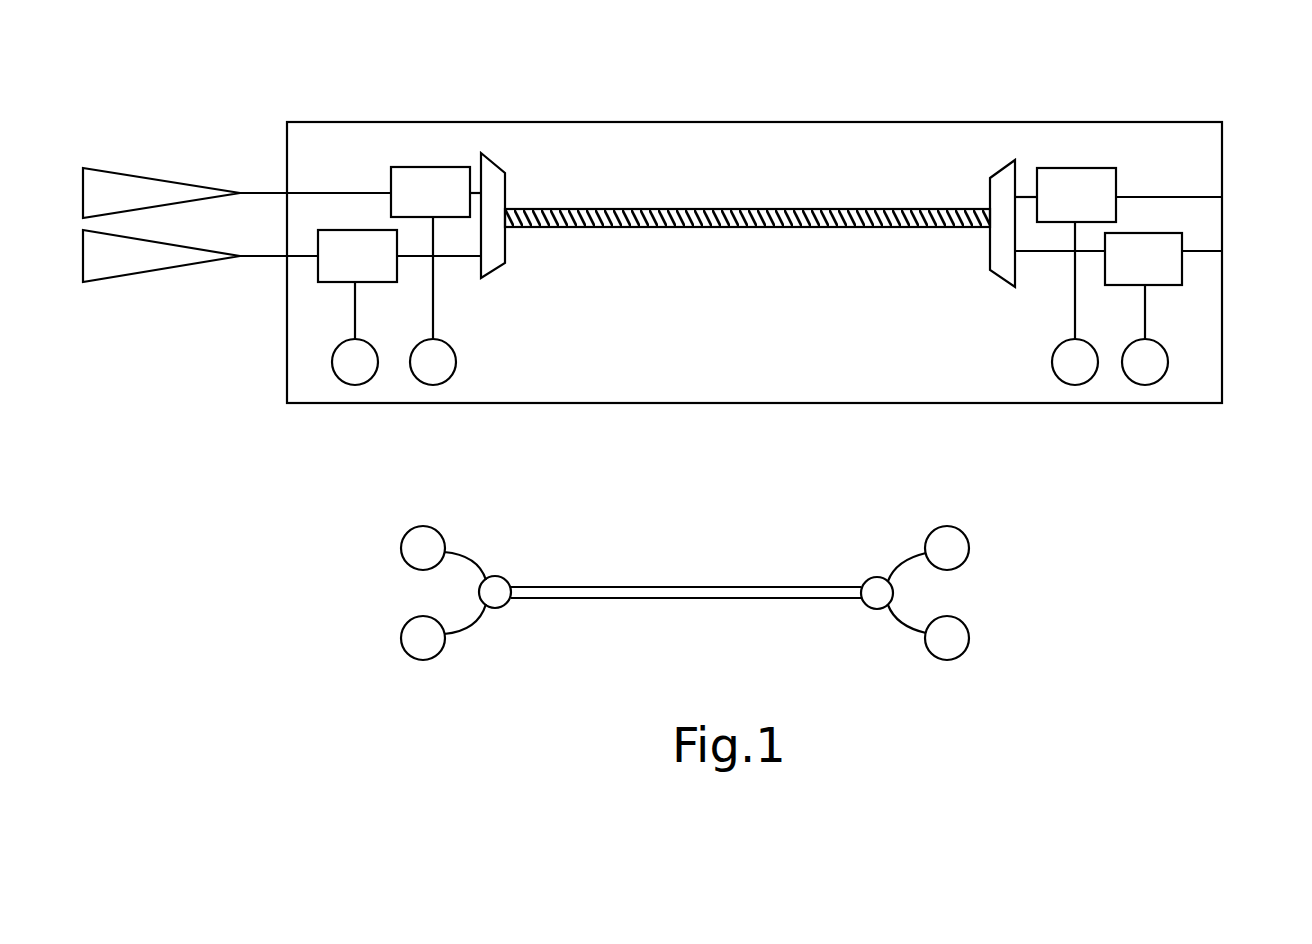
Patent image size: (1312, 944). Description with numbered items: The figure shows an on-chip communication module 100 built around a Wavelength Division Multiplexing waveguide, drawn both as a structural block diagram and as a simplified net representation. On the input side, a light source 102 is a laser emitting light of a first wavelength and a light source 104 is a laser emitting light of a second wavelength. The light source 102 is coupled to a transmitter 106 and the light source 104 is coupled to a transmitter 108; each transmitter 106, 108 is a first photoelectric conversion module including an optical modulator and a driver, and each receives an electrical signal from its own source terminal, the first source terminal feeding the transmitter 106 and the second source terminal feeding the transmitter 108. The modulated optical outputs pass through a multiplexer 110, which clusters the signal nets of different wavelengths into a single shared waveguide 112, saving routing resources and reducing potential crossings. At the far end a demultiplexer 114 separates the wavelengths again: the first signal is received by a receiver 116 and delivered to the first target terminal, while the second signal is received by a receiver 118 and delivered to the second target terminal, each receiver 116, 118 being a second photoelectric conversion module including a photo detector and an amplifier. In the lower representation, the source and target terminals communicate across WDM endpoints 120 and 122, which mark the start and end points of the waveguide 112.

The on-chip communication module 100 is at (767, 122).
The light source 102 is at (123, 270).
The light source 104 is at (120, 182).
The transmitter 106 is at (317, 268).
The transmitter 108 is at (408, 175).
The multiplexer 110 is at (496, 148).
The waveguide 112 is at (688, 209).
The demultiplexer 114 is at (1000, 151).
The receiver 116 is at (1178, 262).
The receiver 118 is at (1063, 178).
The WDM endpoint 120 is at (522, 624).
The WDM endpoint 122 is at (851, 624).